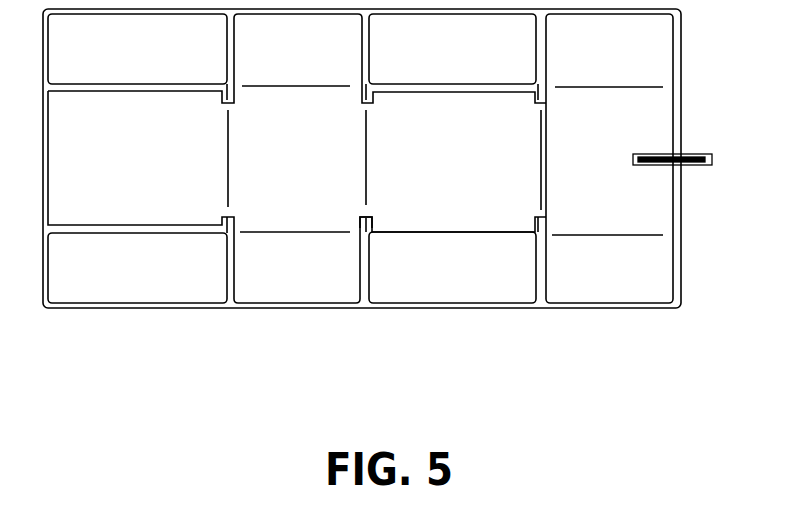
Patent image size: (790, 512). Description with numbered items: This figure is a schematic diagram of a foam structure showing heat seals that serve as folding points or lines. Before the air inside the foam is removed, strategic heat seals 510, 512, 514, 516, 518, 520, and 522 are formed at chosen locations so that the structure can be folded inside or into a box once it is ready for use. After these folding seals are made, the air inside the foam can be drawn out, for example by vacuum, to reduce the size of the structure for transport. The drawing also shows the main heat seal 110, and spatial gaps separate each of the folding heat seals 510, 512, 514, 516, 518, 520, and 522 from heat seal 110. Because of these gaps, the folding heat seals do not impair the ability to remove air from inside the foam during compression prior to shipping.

The heat seal 510 is at (223, 158).
The heat seal 512 is at (267, 86).
The heat seal 514 is at (272, 232).
The heat seal 516 is at (367, 148).
The heat seal 518 is at (540, 137).
The heat seal 520 is at (578, 87).
The heat seal 522 is at (570, 233).
The heat seal 110 is at (368, 228).